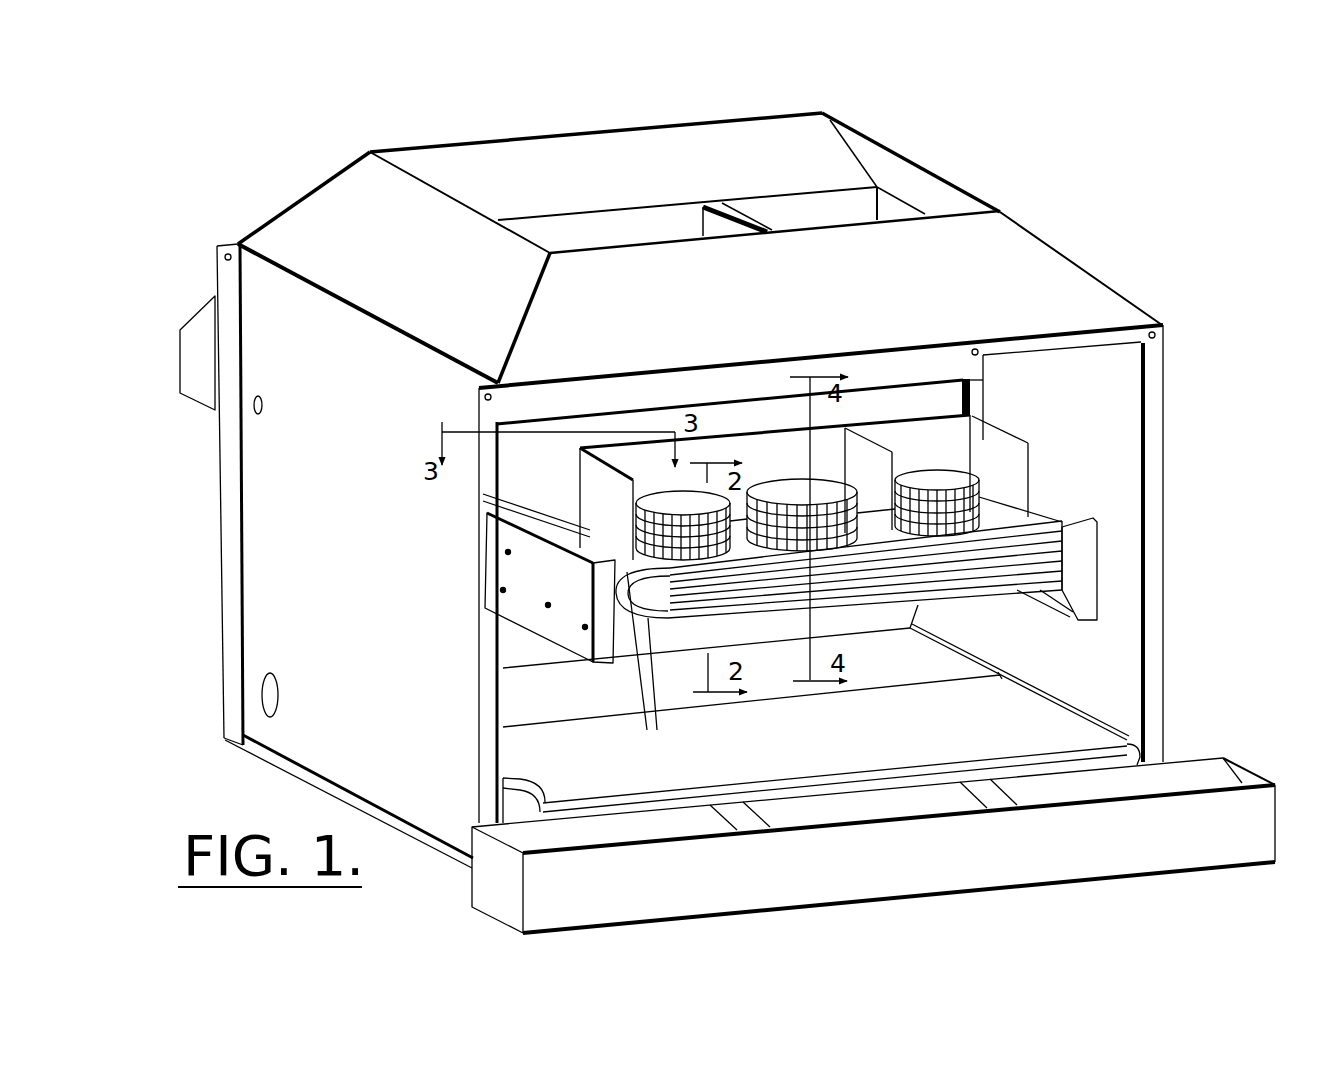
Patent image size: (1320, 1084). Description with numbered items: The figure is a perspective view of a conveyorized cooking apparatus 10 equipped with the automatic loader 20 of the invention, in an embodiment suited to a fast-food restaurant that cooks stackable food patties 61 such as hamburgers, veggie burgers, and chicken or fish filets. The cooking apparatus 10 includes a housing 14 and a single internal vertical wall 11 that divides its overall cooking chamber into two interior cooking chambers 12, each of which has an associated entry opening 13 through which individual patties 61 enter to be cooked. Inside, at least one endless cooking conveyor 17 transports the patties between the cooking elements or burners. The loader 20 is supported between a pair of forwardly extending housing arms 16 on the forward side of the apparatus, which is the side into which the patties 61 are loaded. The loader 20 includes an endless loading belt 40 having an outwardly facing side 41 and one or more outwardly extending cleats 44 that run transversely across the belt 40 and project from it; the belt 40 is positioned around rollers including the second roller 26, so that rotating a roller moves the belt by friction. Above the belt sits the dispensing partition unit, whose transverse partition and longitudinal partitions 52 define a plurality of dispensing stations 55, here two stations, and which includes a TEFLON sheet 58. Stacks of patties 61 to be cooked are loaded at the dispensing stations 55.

The conveyorized cooking apparatus 10 is at (1078, 225).
The internal vertical wall 11 is at (747, 208).
The interior cooking chamber 12 is at (733, 365).
The entry opening 13 is at (643, 415).
The housing 14 is at (360, 516).
The forwardly extending housing arm 16 is at (533, 590).
The endless cooking conveyor 17 is at (565, 521).
The loader 20 is at (1107, 563).
The second roller 26 is at (648, 728).
The endless loading belt 40 is at (1020, 538).
The outwardly facing side 41 is at (735, 600).
The outwardly extending cleat 44 is at (632, 668).
The longitudinal partition 52 is at (575, 511).
The dispensing station 55 is at (795, 445).
The TEFLON sheet 58 is at (835, 470).
The patty 61 is at (680, 505).